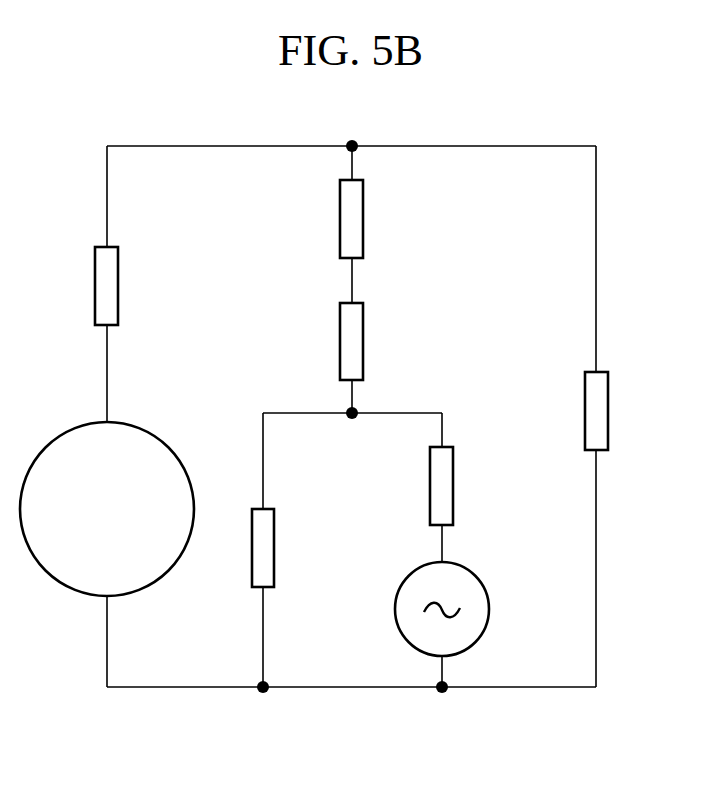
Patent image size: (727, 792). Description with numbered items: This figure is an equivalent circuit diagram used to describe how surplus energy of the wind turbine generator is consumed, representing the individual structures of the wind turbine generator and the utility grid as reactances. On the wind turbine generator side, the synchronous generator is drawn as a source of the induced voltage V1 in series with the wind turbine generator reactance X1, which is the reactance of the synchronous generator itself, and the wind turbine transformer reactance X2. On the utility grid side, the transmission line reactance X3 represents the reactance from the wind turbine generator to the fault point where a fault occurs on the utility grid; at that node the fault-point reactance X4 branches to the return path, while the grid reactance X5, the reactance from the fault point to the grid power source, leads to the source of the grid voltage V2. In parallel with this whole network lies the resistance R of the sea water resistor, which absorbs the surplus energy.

The wind turbine generator reactance X1 is at (123, 286).
The wind turbine transformer reactance X2 is at (368, 219).
The transmission line reactance X3 is at (368, 341).
The fault-point reactance X4 is at (279, 548).
The grid reactance X5 is at (458, 486).
The resistance of the sea water resistor R is at (606, 411).
The induced voltage of the synchronous generator V1 is at (124, 509).
The grid voltage V2 is at (459, 609).